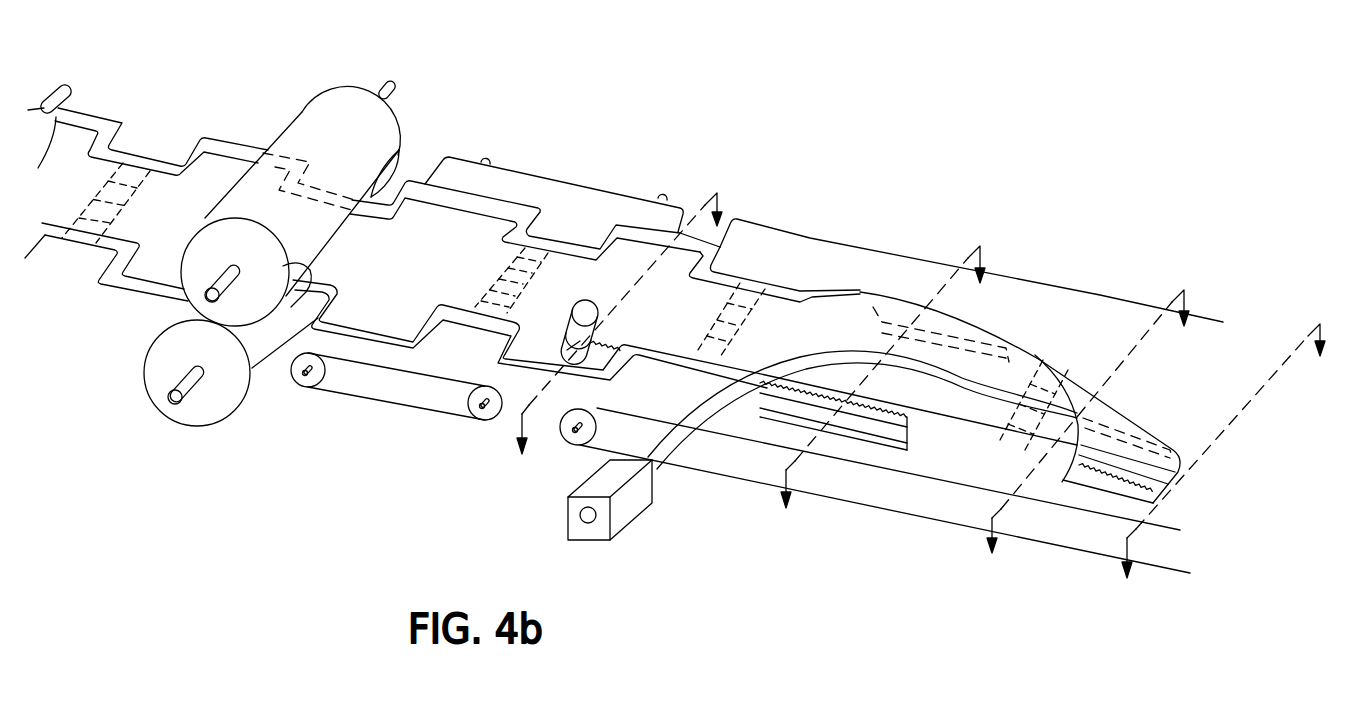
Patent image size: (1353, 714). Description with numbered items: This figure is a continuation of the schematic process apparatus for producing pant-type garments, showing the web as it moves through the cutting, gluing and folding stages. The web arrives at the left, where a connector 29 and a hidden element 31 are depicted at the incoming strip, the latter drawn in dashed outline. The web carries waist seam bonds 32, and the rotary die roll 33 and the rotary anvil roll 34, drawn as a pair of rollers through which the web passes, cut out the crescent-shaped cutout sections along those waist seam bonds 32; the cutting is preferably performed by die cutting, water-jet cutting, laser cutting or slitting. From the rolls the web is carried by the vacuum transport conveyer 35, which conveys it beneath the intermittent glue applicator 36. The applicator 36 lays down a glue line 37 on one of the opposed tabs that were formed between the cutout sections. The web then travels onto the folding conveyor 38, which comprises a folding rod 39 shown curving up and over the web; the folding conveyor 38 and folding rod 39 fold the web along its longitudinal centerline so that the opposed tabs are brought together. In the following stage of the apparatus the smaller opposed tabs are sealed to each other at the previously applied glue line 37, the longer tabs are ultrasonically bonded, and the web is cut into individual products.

The connector 29 is at (68, 90).
The hidden contact element 31 is at (147, 157).
The waist seam bonds 32 is at (110, 150).
The rotary die roll 33 is at (343, 100).
The rotary anvil roll 34 is at (222, 407).
The vacuum transport conveyer 35 is at (423, 363).
The intermittent glue applicator 36 is at (585, 318).
The glue line 37 is at (648, 315).
The folding conveyor 38 is at (750, 460).
The folding rod 39 is at (650, 458).